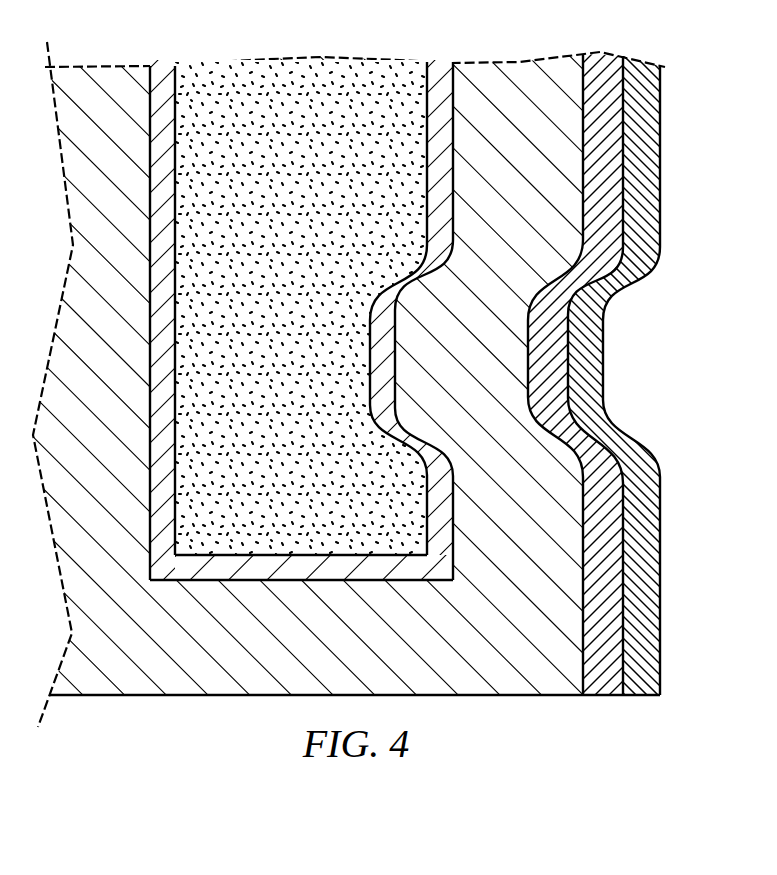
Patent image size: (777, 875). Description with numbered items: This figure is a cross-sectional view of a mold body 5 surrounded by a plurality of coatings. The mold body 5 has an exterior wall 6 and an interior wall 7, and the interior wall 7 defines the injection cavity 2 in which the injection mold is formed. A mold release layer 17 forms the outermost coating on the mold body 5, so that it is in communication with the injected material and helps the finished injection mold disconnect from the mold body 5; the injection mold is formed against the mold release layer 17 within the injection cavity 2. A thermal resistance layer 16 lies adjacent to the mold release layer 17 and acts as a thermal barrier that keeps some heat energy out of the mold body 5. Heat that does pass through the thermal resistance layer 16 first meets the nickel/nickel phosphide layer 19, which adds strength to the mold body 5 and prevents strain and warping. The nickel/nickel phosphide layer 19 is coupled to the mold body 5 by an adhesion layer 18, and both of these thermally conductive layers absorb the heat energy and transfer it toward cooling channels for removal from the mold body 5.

The injection cavity 2 is at (604, 340).
The mold body 5 is at (295, 58).
The exterior wall 6 is at (177, 288).
The interior wall 7 is at (444, 62).
The thermal resistance layer 16 is at (600, 53).
The mold release layer 17 is at (645, 112).
The adhesion layer 18 is at (325, 562).
The nickel/nickel phosphide layer 19 is at (163, 667).